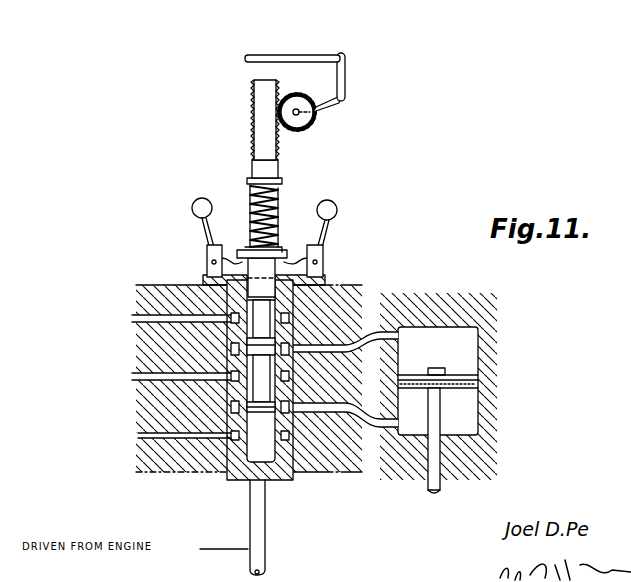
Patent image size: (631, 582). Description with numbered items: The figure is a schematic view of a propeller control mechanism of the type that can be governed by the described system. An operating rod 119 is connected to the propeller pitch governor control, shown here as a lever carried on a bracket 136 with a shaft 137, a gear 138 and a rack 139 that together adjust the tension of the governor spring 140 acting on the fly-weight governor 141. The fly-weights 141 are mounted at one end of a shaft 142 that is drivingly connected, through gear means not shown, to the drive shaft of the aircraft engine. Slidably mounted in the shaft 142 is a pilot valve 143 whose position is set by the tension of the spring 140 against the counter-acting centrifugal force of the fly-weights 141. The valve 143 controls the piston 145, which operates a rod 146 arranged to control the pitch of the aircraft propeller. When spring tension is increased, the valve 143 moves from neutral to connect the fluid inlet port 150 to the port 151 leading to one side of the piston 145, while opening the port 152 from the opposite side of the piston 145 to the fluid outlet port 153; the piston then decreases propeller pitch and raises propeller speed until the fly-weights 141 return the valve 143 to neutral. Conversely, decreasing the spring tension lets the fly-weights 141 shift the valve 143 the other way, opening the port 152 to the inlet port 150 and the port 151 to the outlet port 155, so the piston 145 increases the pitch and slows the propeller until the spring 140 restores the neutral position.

The rod 119 is at (285, 55).
The bracket 136 is at (345, 78).
The shaft 137 is at (320, 109).
The gear 138 is at (297, 95).
The rack 139 is at (252, 104).
The governor spring 140 is at (251, 194).
The fly-weight governor 141 is at (206, 236).
The shaft 142 is at (266, 534).
The valve 143 is at (230, 403).
The piston 145 is at (480, 376).
The rod 146 is at (442, 471).
The fluid inlet port 150 is at (134, 375).
The port 151 is at (351, 415).
The port 152 is at (348, 344).
The fluid outlet port 153 is at (132, 317).
The outlet port 155 is at (141, 437).